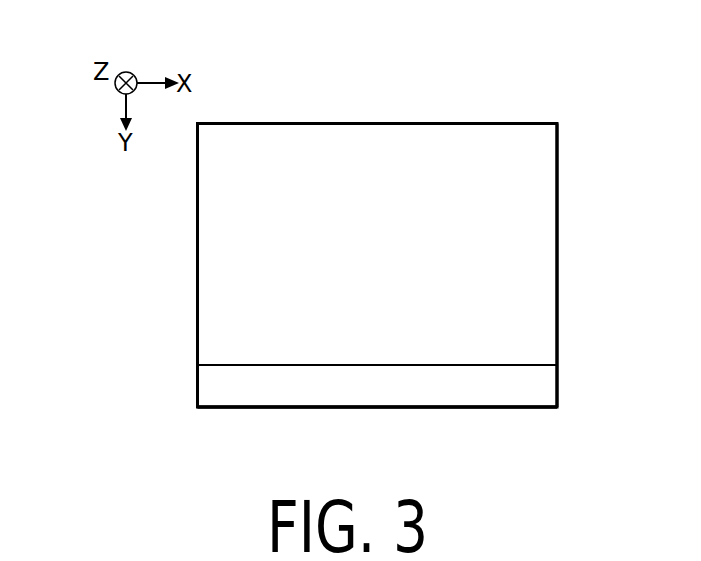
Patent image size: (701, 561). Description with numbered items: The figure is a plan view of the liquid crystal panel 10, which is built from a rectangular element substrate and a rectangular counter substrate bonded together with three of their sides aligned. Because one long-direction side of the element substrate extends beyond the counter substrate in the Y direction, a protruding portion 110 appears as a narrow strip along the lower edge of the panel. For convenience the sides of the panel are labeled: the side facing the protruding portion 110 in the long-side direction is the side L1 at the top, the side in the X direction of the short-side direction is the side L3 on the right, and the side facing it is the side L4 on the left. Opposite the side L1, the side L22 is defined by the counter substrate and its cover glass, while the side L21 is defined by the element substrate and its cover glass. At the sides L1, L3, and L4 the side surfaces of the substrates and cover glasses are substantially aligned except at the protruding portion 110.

The liquid crystal panel 10 is at (112, 27).
The protruding portion 110 is at (535, 385).
The side L1 is at (378, 108).
The side L3 is at (575, 266).
The side L4 is at (180, 266).
The side L21 is at (378, 425).
The side L22 is at (378, 350).